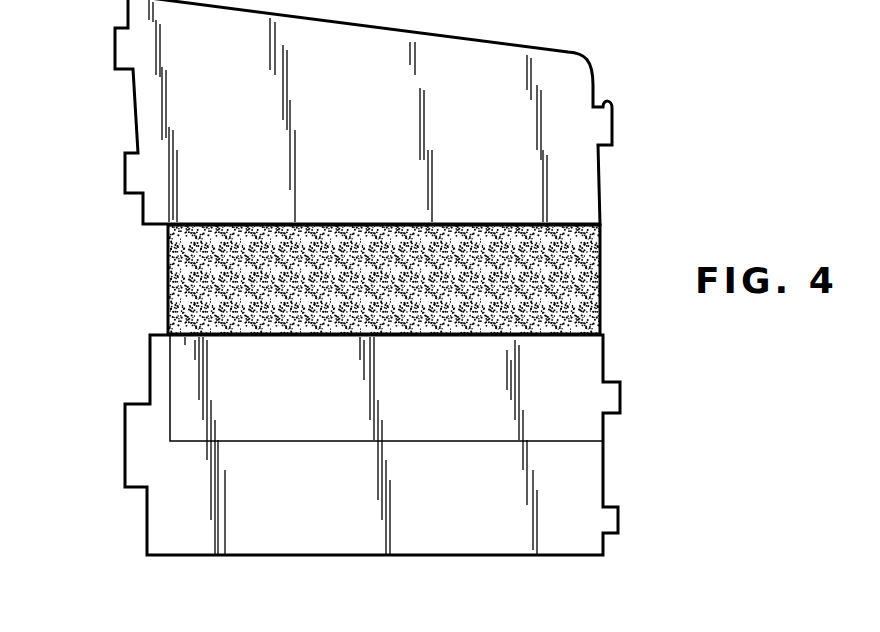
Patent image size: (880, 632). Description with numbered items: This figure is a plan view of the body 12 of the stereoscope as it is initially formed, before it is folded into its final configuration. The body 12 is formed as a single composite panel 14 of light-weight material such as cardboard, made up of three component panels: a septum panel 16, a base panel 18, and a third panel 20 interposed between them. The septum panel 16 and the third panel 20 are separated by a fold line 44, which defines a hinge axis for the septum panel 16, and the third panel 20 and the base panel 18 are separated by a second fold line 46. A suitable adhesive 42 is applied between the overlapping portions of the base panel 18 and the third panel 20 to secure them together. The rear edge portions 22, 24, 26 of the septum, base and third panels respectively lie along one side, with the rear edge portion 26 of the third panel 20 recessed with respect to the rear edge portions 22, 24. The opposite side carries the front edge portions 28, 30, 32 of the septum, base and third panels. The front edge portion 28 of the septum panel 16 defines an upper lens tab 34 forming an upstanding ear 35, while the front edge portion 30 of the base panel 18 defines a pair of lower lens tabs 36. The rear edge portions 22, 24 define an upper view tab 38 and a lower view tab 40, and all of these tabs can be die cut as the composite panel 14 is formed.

The body 12 is at (607, 183).
The composite panel 14 is at (143, 348).
The septum panel 16 is at (372, 136).
The base panel 18 is at (468, 408).
The third panel 20 is at (602, 290).
The rear edge portion of the septum panel 22 is at (133, 112).
The rear edge portion of the base panel 24 is at (150, 385).
The rear edge portion of the third panel 26 is at (168, 270).
The front edge portion of the septum panel 28 is at (595, 83).
The front edge portion of the base panel 30 is at (603, 477).
The front edge portion of the third panel 32 is at (602, 247).
The upper lens tab 34 is at (615, 145).
The upstanding ear 35 is at (610, 104).
The lower lens tabs 36 is at (620, 396).
The upper view tab 38 is at (121, 50).
The lower view tab 40 is at (135, 450).
The adhesive 42 is at (183, 305).
The fold line 44 is at (358, 224).
The fold line 46 is at (283, 335).